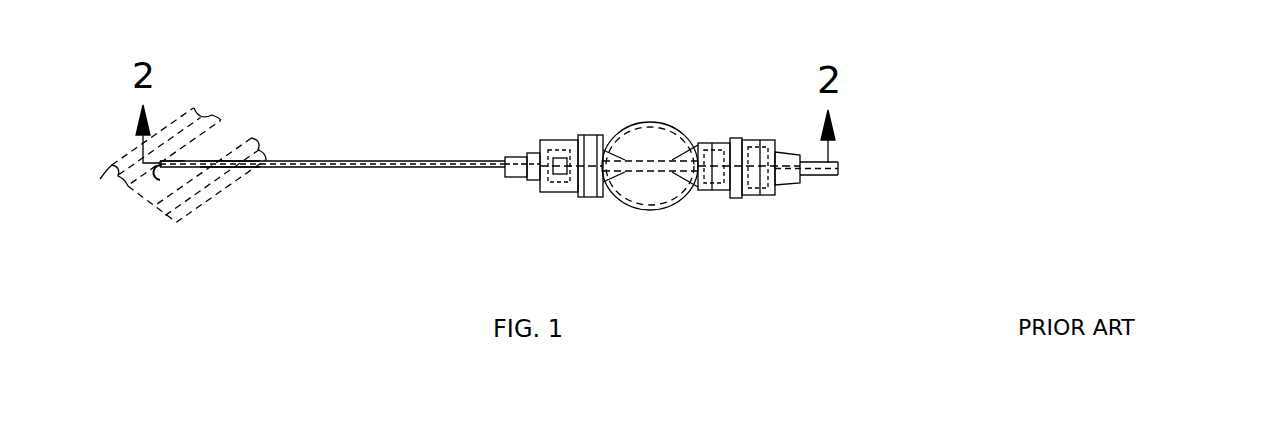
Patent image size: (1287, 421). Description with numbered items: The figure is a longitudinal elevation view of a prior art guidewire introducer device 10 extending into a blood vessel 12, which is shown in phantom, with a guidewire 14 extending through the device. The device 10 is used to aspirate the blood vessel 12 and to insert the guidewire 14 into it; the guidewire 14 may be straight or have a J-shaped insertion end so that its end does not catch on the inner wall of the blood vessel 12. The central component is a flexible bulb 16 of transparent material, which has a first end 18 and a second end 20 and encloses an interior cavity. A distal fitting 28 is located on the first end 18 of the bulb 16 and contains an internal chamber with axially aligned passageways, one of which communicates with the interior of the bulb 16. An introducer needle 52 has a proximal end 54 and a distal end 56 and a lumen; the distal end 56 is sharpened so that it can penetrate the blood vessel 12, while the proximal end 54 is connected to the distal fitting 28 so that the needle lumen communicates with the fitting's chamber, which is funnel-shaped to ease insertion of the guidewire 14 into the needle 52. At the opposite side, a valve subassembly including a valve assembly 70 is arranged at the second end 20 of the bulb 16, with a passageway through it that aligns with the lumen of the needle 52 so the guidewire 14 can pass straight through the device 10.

The guidewire introducer device 10 is at (550, 155).
The blood vessel 12 is at (157, 223).
The guidewire 14 is at (550, 184).
The flexible bulb 16 is at (641, 216).
The first end 18 is at (531, 133).
The second end 20 is at (725, 127).
The distal fitting 28 is at (523, 192).
The introducer needle 52 is at (237, 176).
The proximal end 54 is at (495, 176).
The distal end 56 is at (188, 177).
The valve assembly 70 is at (757, 126).